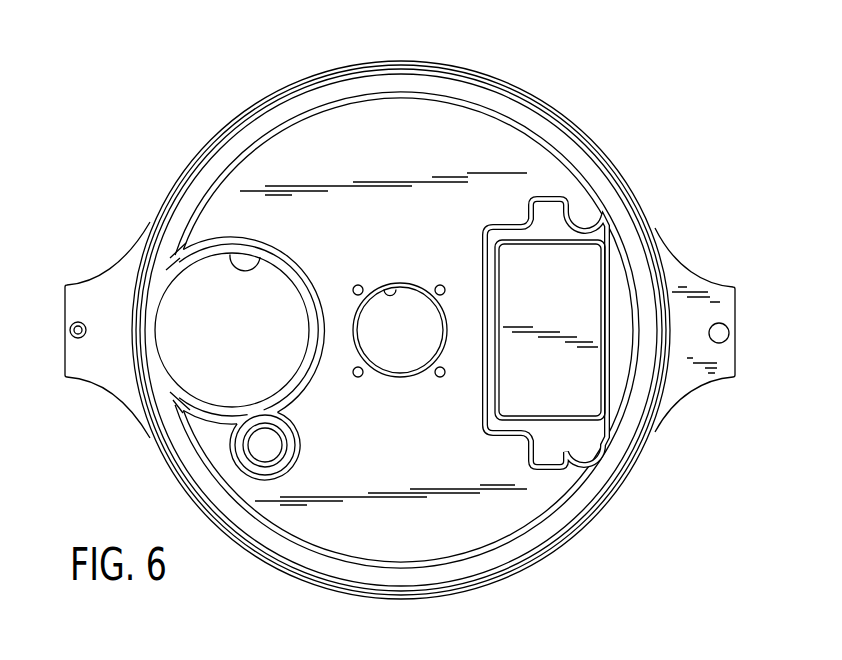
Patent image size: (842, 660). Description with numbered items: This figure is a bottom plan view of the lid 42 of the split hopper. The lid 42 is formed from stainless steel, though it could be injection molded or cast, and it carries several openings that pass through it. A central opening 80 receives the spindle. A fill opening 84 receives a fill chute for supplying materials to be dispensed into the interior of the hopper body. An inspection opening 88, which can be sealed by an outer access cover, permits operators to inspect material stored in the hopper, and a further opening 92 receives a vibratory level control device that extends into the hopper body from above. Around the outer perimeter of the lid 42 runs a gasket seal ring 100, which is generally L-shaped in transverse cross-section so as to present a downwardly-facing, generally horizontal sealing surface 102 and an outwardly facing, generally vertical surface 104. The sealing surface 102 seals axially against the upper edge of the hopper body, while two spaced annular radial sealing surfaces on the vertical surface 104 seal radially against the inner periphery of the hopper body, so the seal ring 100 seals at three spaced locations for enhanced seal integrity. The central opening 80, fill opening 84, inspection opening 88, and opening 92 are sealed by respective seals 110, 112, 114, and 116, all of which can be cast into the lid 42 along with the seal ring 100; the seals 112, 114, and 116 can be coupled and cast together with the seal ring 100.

The lid 42 is at (571, 68).
The central opening 80 is at (388, 291).
The fill opening 84 is at (264, 262).
The inspection opening 88 is at (511, 243).
The opening 92 is at (258, 448).
The gasket seal ring 100 is at (470, 94).
The sealing surface 102 is at (433, 87).
The vertical surface 104 is at (400, 71).
The seal 110 is at (408, 378).
The seal 112 is at (277, 257).
The seal 114 is at (556, 215).
The seal 116 is at (292, 419).